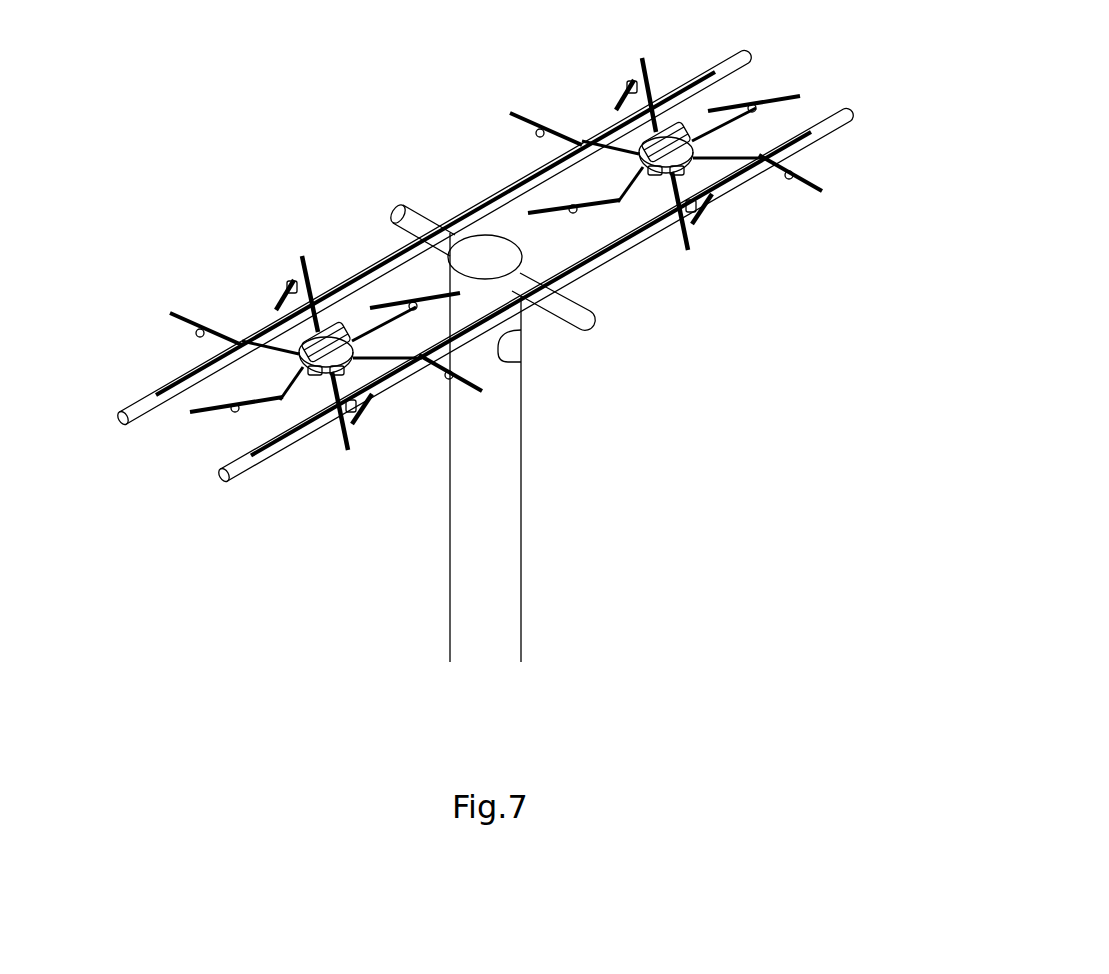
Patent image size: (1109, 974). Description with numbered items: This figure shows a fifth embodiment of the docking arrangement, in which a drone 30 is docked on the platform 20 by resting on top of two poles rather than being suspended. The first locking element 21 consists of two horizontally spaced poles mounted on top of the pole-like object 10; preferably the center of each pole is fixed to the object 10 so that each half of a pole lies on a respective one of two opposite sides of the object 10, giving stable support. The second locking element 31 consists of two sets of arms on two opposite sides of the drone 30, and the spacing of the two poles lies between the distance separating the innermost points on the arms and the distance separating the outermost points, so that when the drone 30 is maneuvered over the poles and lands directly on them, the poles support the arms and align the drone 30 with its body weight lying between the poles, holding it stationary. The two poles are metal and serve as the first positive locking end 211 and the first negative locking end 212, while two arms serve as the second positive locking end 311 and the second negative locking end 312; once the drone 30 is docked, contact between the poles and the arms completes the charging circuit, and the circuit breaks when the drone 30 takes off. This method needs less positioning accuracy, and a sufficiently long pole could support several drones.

The pole-like object 10 is at (541, 447).
The platform 20 is at (434, 245).
The first locking element 21 is at (477, 270).
The first positive locking end 211 is at (408, 238).
The first negative locking end 212 is at (535, 310).
The drone 30 is at (496, 201).
The second locking element 31 is at (606, 148).
The second positive locking end 311 is at (300, 308).
The second negative locking end 312 is at (407, 362).